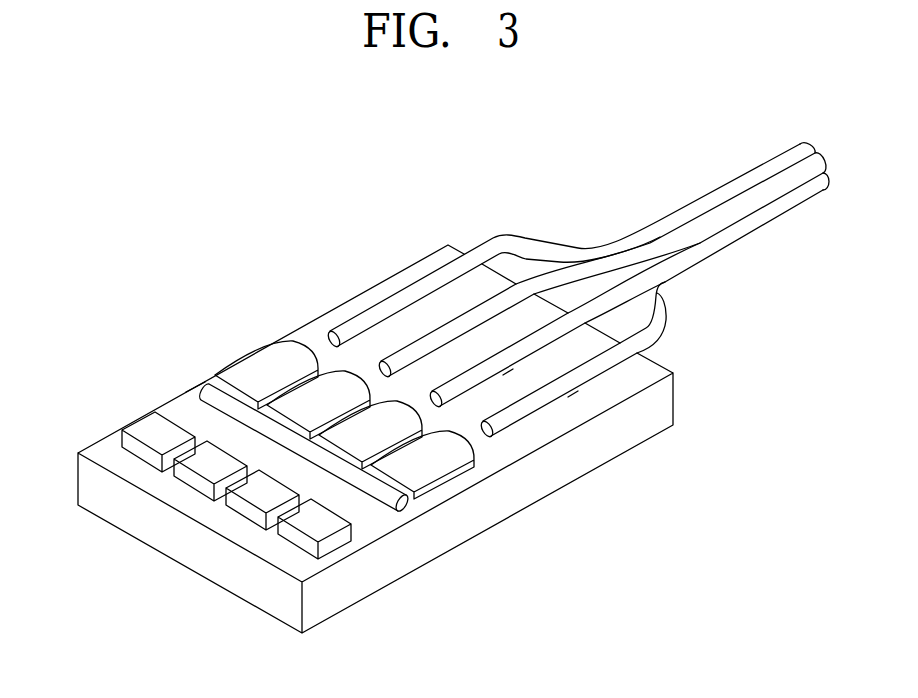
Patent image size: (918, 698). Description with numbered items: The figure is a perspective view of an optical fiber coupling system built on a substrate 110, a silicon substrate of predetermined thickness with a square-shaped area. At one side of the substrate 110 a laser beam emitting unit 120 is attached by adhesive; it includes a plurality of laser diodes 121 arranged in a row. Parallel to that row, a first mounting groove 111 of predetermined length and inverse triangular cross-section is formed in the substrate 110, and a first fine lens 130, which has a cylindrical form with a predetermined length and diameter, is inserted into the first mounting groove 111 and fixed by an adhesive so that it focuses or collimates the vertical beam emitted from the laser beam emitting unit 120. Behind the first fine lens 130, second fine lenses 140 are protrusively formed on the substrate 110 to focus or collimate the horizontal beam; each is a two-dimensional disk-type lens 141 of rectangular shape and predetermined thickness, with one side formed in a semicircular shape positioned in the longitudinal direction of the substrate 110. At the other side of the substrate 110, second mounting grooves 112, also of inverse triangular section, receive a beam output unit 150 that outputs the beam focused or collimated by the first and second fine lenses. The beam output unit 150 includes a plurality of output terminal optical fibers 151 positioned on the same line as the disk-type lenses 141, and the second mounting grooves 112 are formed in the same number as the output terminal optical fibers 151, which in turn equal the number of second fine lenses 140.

The substrate 110 is at (402, 233).
The first mounting groove 111 is at (196, 391).
The second mounting groove 112 is at (503, 375).
The laser beam emitting unit 120 is at (196, 507).
The laser diodes 121 is at (210, 472).
The first fine lens 130 is at (194, 376).
The second fine lenses 140 is at (353, 441).
The disk-type lens 141 is at (330, 378).
The beam output unit 150 is at (577, 291).
The output terminal optical fibers 151 is at (587, 266).